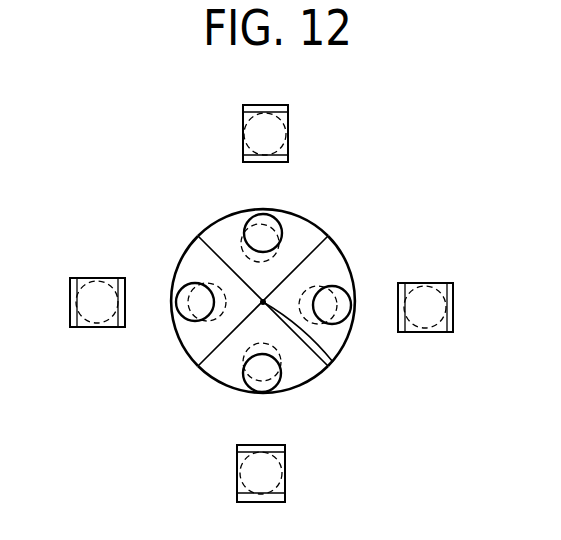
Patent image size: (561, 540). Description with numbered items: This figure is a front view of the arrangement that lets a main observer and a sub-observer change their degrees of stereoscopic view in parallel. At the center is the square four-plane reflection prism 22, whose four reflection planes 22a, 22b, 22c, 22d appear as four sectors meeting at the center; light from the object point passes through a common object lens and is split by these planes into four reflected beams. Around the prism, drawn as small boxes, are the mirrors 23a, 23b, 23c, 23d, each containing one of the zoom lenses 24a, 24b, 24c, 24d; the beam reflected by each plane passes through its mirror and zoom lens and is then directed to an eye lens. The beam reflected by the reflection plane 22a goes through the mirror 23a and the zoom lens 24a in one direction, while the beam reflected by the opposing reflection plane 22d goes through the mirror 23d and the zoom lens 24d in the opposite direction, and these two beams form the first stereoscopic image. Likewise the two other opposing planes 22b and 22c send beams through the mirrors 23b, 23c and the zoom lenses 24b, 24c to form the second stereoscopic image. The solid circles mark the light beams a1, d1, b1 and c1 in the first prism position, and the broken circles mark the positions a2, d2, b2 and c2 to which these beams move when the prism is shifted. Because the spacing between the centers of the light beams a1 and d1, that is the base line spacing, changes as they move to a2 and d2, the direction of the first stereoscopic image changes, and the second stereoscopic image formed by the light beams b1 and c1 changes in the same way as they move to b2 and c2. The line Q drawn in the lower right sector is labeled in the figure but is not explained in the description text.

The four-plane reflection prism 22 is at (259, 306).
The reflection plane 22a is at (197, 357).
The reflection plane 22b is at (307, 238).
The reflection plane 22c is at (305, 373).
The reflection plane 22d is at (330, 338).
The boundary line Q is at (334, 363).
The light beam a1 is at (180, 292).
The light beam position a2 is at (212, 322).
The light beam b1 is at (255, 223).
The light beam position b2 is at (283, 248).
The light beam c1 is at (256, 393).
The light beam position c2 is at (241, 362).
The light beam d1 is at (340, 295).
The light beam position d2 is at (305, 285).
The mirror 23a is at (83, 327).
The mirror 23b is at (290, 118).
The mirror 23c is at (285, 485).
The mirror 23d is at (437, 283).
The zoom lens 24a is at (93, 290).
The zoom lens 24b is at (275, 140).
The zoom lens 24c is at (270, 468).
The zoom lens 24d is at (430, 318).